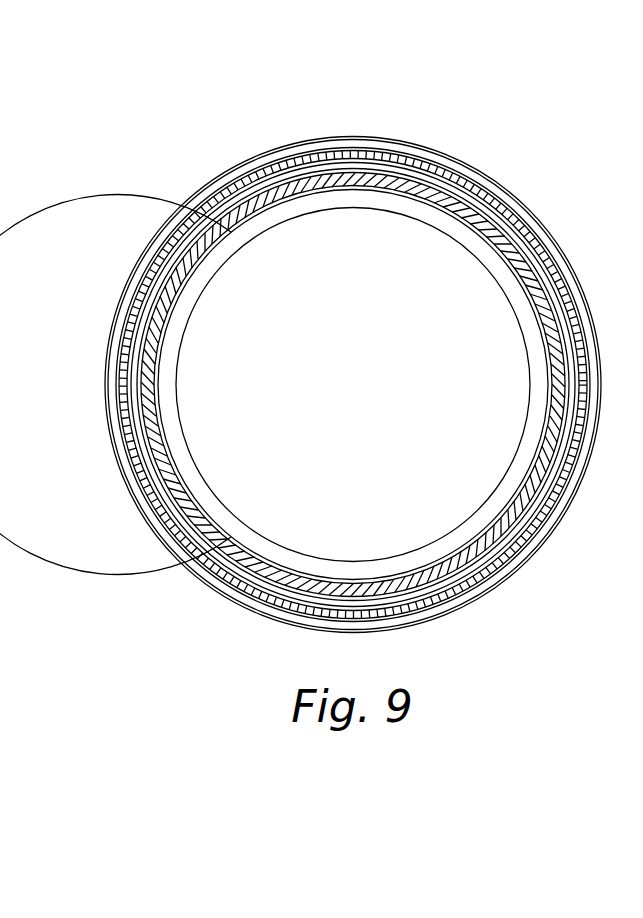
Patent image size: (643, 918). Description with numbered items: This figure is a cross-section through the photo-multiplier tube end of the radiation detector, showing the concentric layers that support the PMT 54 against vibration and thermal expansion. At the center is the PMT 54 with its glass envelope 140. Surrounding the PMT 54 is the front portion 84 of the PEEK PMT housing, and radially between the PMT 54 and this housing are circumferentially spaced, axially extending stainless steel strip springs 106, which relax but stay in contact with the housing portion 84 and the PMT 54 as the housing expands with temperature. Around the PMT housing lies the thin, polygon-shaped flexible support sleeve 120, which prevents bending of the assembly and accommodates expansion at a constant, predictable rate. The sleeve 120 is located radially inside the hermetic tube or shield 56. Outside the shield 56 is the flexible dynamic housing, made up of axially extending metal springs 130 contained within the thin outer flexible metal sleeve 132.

The photo-multiplier tube 54 is at (368, 386).
The tube or shield 56 is at (430, 172).
The front portion of PMT housing 84 is at (265, 200).
The radial strip springs 106 is at (240, 220).
The flexible support sleeve 120 is at (317, 173).
The metal springs 130 is at (513, 207).
The outer flexible metal sleeve 132 is at (538, 220).
The glass envelope 140 is at (183, 460).